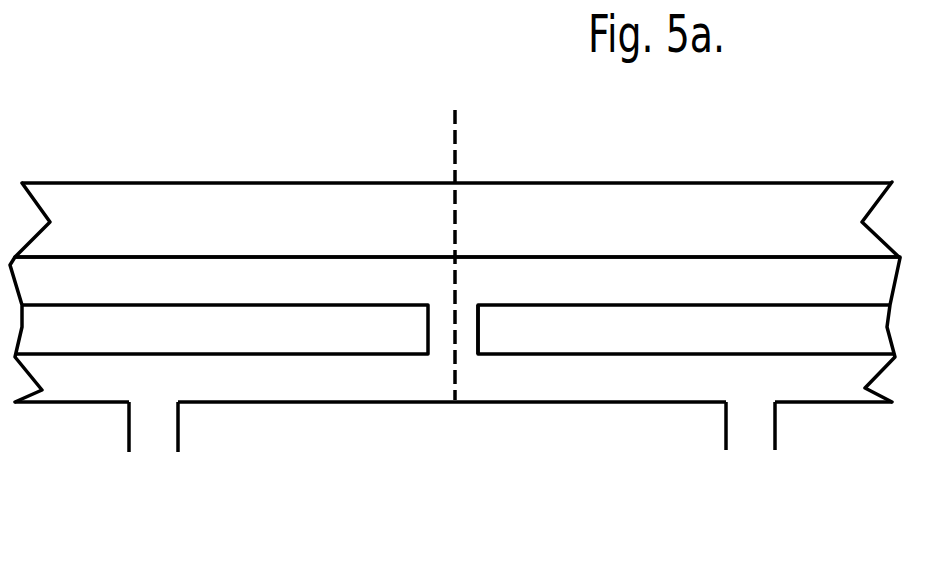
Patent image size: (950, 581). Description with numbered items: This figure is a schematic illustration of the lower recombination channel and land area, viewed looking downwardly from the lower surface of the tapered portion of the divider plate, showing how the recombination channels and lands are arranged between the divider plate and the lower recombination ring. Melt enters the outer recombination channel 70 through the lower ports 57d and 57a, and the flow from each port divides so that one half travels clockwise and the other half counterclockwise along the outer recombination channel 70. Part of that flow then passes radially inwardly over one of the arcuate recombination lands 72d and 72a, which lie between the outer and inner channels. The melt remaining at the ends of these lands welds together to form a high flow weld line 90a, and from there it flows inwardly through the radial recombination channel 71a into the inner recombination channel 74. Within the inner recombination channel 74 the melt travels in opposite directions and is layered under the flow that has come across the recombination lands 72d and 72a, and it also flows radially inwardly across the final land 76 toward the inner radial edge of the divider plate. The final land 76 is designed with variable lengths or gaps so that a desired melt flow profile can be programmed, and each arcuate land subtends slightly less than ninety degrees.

The inner recombination channel 74 is at (457, 192).
The final land 76 is at (457, 170).
The high flow weld line 90a is at (512, 235).
The arcuate recombination land 72d is at (248, 383).
The arcuate recombination land 72a is at (686, 385).
The radial recombination channel 71a is at (546, 402).
The outer recombination channel 70 is at (453, 441).
The lower port 57d is at (206, 464).
The lower port 57a is at (701, 487).